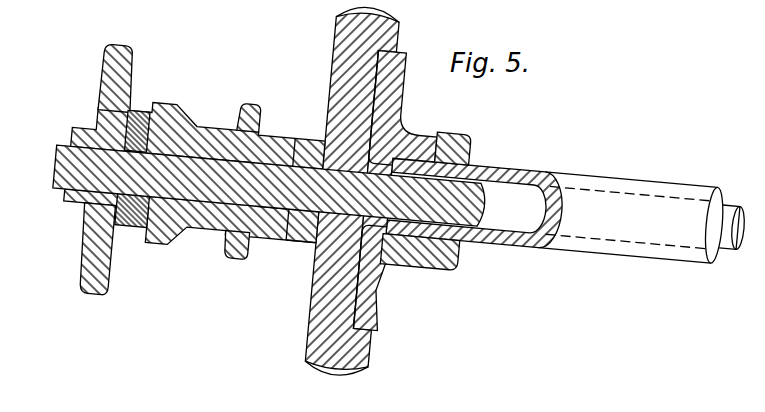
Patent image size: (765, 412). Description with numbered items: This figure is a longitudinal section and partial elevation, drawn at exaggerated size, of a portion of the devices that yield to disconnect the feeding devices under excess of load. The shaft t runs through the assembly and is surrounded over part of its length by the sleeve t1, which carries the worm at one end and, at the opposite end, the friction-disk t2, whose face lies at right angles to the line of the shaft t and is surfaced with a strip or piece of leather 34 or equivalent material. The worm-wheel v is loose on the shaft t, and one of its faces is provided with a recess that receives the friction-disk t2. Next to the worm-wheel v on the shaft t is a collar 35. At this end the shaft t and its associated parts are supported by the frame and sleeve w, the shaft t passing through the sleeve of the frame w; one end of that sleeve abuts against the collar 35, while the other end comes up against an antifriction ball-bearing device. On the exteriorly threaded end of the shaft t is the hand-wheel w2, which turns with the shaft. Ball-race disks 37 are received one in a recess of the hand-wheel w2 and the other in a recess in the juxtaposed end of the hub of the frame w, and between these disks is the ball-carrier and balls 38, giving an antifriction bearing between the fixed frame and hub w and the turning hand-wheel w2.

The shaft t is at (54, 168).
The sleeve t1 is at (643, 183).
The friction-disk t2 is at (374, 297).
The worm-wheel v is at (335, 353).
The frame and sleeve w is at (199, 228).
The hand-wheel w2 is at (124, 29).
The strip or piece of leather 34 is at (352, 313).
The collar 35 is at (297, 237).
The ball-race disks 37 is at (135, 230).
The ball-carrier and balls 38 is at (140, 112).